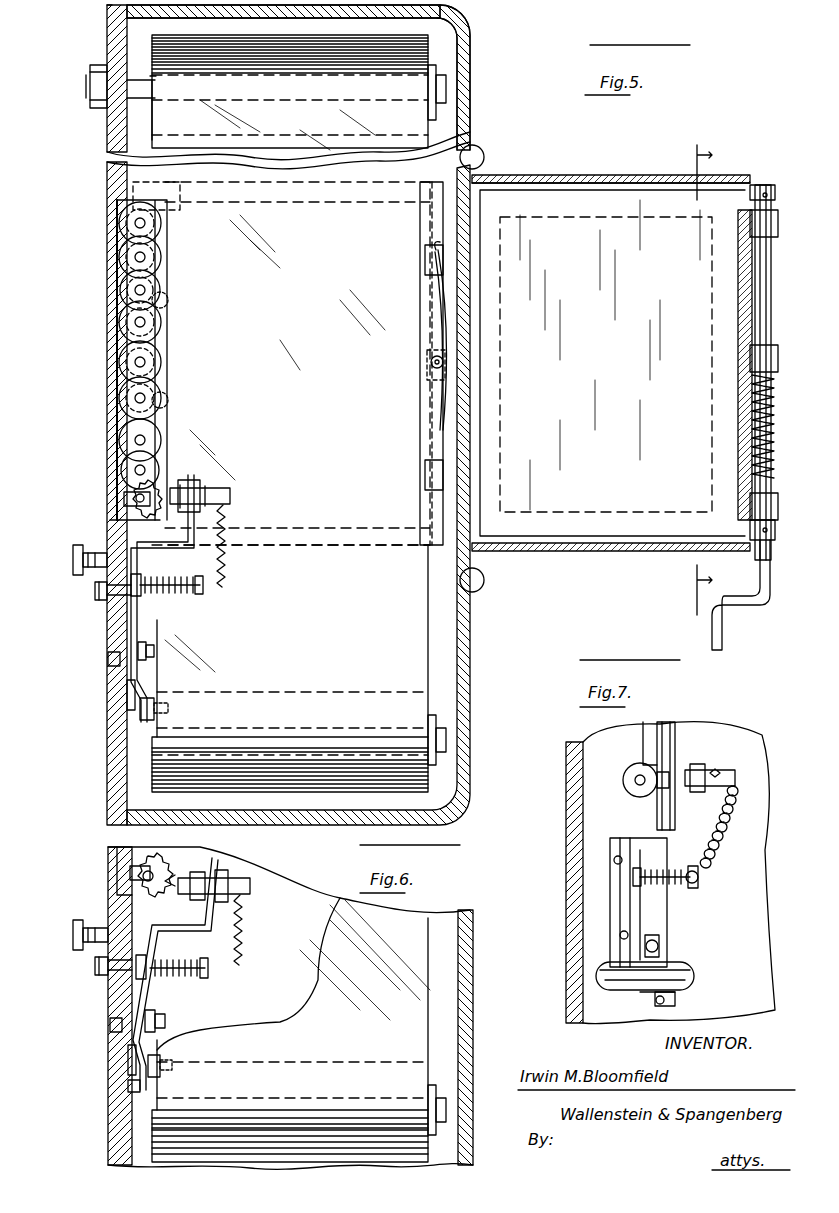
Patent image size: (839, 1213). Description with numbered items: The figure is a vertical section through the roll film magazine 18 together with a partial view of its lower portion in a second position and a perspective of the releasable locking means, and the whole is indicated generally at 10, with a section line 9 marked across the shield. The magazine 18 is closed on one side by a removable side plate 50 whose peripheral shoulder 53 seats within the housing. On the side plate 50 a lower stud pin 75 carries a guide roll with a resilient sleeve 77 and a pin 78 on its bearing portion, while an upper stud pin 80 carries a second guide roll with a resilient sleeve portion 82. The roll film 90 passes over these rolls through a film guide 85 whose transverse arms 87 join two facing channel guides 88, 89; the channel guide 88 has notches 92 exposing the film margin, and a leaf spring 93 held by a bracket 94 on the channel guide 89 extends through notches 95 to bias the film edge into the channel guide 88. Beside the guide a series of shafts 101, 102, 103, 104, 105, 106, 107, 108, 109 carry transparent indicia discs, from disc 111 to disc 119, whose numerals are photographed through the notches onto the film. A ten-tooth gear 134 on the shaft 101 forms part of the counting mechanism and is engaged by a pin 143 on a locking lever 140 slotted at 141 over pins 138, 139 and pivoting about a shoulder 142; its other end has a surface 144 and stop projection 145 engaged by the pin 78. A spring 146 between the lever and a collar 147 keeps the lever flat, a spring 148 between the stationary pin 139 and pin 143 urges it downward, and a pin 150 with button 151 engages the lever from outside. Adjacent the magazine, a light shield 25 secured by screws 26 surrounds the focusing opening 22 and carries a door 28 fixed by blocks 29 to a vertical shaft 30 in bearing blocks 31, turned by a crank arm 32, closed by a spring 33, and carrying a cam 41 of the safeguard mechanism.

In FIG. 5, the section line 9- 9 is at (686, 380).
In FIG. 5, the motion picture viewing apparatus 10 is at (505, 60).
In FIG. 5, the roll film magazine 18 is at (470, 652).
In FIG. 6, the roll film magazine 18 is at (473, 990).
In FIG. 5, the focusing opening 22 is at (615, 510).
In FIG. 5, the light shield 25 is at (568, 560).
In FIG. 5, the screws 26 is at (482, 152).
In FIG. 5, the door 28 is at (598, 195).
In FIG. 5, the blocks 29 is at (768, 185).
In FIG. 5, the vertical shaft 30 is at (745, 267).
In FIG. 5, the bearing blocks 31 is at (752, 222).
In FIG. 5, the crank arm 32 is at (735, 608).
In FIG. 5, the spring 33 is at (765, 417).
In FIG. 5, the cam 41 is at (752, 353).
In FIG. 5, the side plate 50 is at (110, 116).
In FIG. 6, the side plate 50 is at (110, 850).
In FIG. 5, the shoulder 53 is at (125, 30).
In FIG. 6, the shoulder 53 is at (115, 1140).
In FIG. 5, the stud pin 75 is at (446, 738).
In FIG. 6, the stud pin 75 is at (446, 1110).
In FIG. 5, the resilient sleeve 77 is at (428, 785).
In FIG. 6, the resilient sleeve 77 is at (430, 1152).
In FIG. 5, the pin 78 is at (140, 712).
In FIG. 6, the pin 78 is at (160, 1050).
In FIG. 7, the pin 78 is at (655, 1002).
In FIG. 5, the stud pin 80 is at (443, 98).
In FIG. 5, the resilient sleeve portion 82 is at (440, 120).
In FIG. 5, the film guide 85 is at (352, 548).
In FIG. 5, the transverse arms 87 is at (325, 205).
In FIG. 5, the channel guide 88 is at (165, 385).
In FIG. 5, the channel guide 89 is at (420, 410).
In FIG. 5, the roll film 90 is at (430, 624).
In FIG. 6, the roll film 90 is at (425, 1020).
In FIG. 5, the notches 92 is at (160, 292).
In FIG. 5, the leaf spring 93 is at (445, 318).
In FIG. 5, the bracket 94 is at (430, 374).
In FIG. 5, the notches 95 is at (425, 265).
In FIG. 5, the shaft 101 is at (122, 492).
In FIG. 6, the shaft 101 is at (130, 870).
In FIG. 5, the shaft 102 is at (120, 467).
In FIG. 5, the shaft 103 is at (120, 446).
In FIG. 5, the shaft 104 is at (120, 393).
In FIG. 5, the shaft 105 is at (120, 352).
In FIG. 5, the shaft 106 is at (120, 320).
In FIG. 5, the shaft 107 is at (120, 291).
In FIG. 5, the shaft 108 is at (160, 257).
In FIG. 5, the shaft 109 is at (160, 225).
In FIG. 5, the transparent disc 111 is at (110, 522).
In FIG. 5, the transparent disc 119 is at (120, 232).
In FIG. 5, the ten-tooth gear 134 is at (124, 504).
In FIG. 6, the ten-tooth gear 134 is at (130, 886).
In FIG. 7, the ten-tooth gear 134 is at (628, 795).
In FIG. 5, the pin 138 is at (154, 650).
In FIG. 6, the pin 138 is at (165, 1020).
In FIG. 7, the pin 138 is at (660, 948).
In FIG. 5, the pin 139 is at (150, 620).
In FIG. 6, the pin 139 is at (136, 985).
In FIG. 7, the pin 139 is at (700, 879).
In FIG. 5, the locking lever 140 is at (131, 617).
In FIG. 6, the locking lever 140 is at (158, 1000).
In FIG. 7, the locking lever 140 is at (667, 912).
In FIG. 7, the slots 141 is at (614, 859).
In FIG. 5, the shoulder 142 is at (108, 662).
In FIG. 6, the shoulder 142 is at (110, 1032).
In FIG. 7, the shoulder 142 is at (600, 975).
In FIG. 5, the pin 143 is at (215, 495).
In FIG. 6, the pin 143 is at (250, 888).
In FIG. 7, the pin 143 is at (720, 775).
In FIG. 5, the surface 144 is at (127, 688).
In FIG. 6, the surface 144 is at (128, 1065).
In FIG. 7, the surface 144 is at (640, 995).
In FIG. 6, the stop projection 145 is at (128, 1086).
In FIG. 7, the stop projection 145 is at (675, 1000).
In FIG. 5, the spring 146 is at (200, 587).
In FIG. 6, the spring 146 is at (186, 958).
In FIG. 7, the spring 146 is at (655, 840).
In FIG. 5, the collar 147 is at (203, 598).
In FIG. 6, the collar 147 is at (208, 975).
In FIG. 7, the collar 147 is at (685, 888).
In FIG. 5, the spring 148 is at (222, 555).
In FIG. 6, the spring 148 is at (225, 945).
In FIG. 7, the spring 148 is at (718, 847).
In FIG. 5, the pin 150 is at (95, 591).
In FIG. 6, the pin 150 is at (95, 966).
In FIG. 5, the button 151 is at (73, 554).
In FIG. 6, the button 151 is at (73, 930).